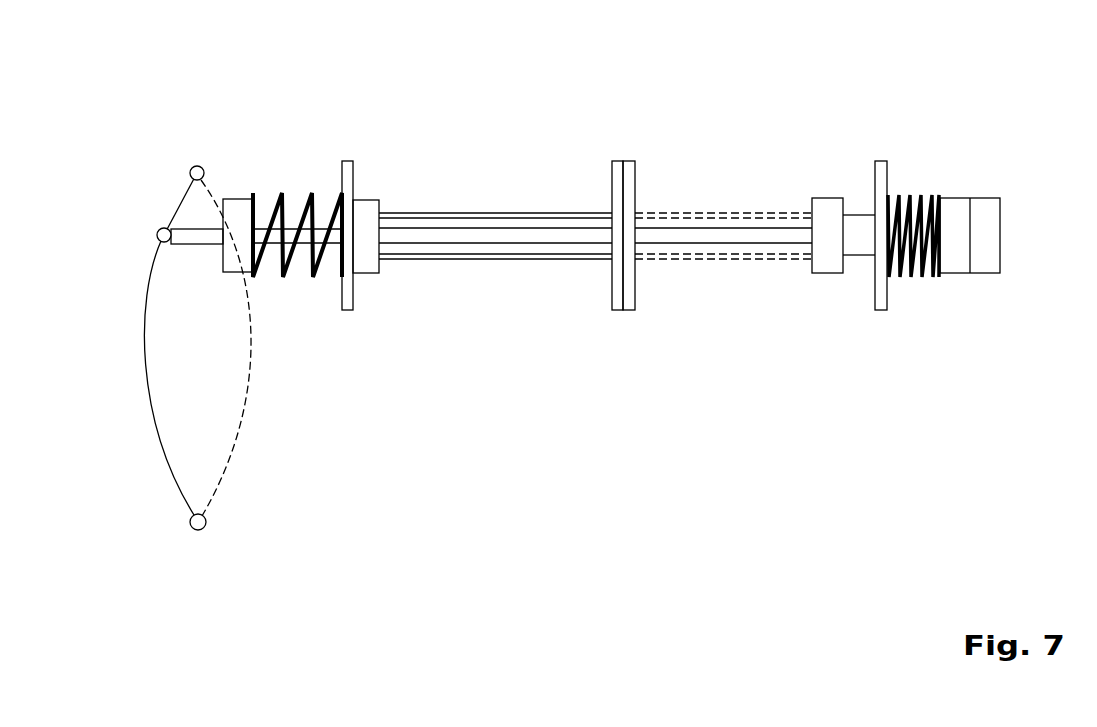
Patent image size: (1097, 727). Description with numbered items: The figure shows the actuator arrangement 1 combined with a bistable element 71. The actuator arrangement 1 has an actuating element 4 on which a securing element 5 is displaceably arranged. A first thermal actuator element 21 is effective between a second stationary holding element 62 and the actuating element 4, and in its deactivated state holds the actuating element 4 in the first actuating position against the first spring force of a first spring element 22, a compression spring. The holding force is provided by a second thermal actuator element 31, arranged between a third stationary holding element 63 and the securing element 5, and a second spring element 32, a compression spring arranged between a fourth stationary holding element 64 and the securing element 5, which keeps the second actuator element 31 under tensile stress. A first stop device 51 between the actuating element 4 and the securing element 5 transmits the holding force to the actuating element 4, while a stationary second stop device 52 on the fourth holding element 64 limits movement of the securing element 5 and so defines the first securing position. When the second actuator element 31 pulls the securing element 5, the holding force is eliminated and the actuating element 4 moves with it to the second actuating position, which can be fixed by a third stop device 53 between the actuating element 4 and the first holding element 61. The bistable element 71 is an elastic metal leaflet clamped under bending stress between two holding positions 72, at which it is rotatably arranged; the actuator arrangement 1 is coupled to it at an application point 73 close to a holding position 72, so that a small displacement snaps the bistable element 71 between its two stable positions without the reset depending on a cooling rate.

The actuator arrangement 1 is at (703, 131).
The actuating element 4 is at (708, 238).
The securing element 5 is at (857, 245).
The first thermal actuator element 21 is at (496, 212).
The first spring element 22 is at (276, 202).
The second thermal actuator element 31 is at (672, 210).
The second spring element 32 is at (915, 272).
The first stop device 51 is at (971, 196).
The second stop device 52 is at (860, 198).
The third stop device 53 is at (360, 193).
The first holding element 61 is at (346, 161).
The second stationary holding element 62 is at (617, 161).
The third stationary holding element 63 is at (630, 161).
The fourth stationary holding element 64 is at (881, 161).
The bistable element 71 is at (143, 348).
The holding positions 72 is at (198, 165).
The application point 73 is at (157, 235).